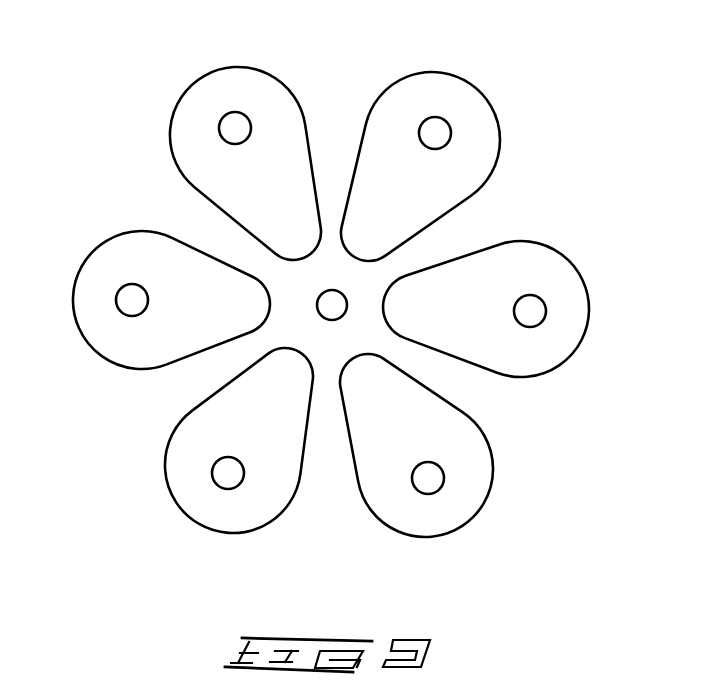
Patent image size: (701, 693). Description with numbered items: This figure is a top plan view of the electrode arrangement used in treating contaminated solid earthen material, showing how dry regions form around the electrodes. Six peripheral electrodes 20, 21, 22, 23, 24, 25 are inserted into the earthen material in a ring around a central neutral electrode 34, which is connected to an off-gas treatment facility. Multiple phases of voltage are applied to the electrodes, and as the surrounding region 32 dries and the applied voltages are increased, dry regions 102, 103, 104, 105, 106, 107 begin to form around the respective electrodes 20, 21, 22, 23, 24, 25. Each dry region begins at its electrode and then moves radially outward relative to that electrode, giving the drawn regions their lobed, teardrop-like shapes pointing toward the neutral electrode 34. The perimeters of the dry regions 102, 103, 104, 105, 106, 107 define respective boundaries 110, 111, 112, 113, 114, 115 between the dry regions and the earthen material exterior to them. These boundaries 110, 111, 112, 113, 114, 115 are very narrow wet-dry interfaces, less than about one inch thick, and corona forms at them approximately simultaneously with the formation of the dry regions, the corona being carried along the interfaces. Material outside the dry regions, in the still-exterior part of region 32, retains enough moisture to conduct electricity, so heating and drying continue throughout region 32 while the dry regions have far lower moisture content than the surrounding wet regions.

The peripheral electrode 20 is at (538, 313).
The peripheral electrode 21 is at (440, 127).
The peripheral electrode 22 is at (232, 114).
The peripheral electrode 23 is at (125, 298).
The peripheral electrode 24 is at (222, 476).
The peripheral electrode 25 is at (436, 483).
The region 32 is at (310, 293).
The neutral electrode 34 is at (342, 296).
The dry region 102 is at (570, 280).
The dry region 103 is at (477, 165).
The dry region 104 is at (292, 150).
The dry region 105 is at (120, 348).
The dry region 106 is at (228, 518).
The dry region 107 is at (473, 453).
The boundary 110 is at (463, 365).
The boundary 111 is at (450, 227).
The boundary 112 is at (190, 186).
The boundary 113 is at (224, 252).
The boundary 114 is at (200, 397).
The boundary 115 is at (348, 465).